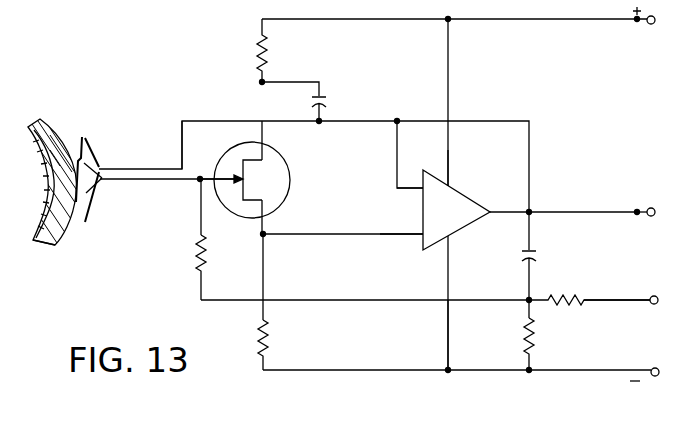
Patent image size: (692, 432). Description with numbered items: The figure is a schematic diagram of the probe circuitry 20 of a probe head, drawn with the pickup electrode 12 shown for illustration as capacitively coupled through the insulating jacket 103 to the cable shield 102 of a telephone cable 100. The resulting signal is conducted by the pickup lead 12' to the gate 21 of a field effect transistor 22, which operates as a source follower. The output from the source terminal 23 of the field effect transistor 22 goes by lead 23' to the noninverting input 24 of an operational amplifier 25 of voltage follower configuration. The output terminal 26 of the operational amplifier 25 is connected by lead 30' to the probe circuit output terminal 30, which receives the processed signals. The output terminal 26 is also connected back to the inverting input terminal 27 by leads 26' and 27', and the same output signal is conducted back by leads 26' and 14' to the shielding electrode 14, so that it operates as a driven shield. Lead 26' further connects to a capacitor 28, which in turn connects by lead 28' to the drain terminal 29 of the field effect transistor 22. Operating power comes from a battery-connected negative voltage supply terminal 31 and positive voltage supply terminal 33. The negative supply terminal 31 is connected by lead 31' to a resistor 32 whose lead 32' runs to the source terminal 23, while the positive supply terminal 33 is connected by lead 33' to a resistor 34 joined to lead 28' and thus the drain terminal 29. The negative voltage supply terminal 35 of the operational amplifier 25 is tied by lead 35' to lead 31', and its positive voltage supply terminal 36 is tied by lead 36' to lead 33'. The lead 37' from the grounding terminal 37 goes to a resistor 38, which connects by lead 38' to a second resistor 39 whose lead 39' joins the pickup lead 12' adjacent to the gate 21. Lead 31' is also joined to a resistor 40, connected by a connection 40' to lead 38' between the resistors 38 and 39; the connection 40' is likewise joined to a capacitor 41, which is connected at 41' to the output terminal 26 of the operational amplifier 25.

The telephone cable 100 is at (52, 118).
The cable shield 102 is at (46, 186).
The insulating jacket 103 is at (44, 241).
The pickup electrode 12 is at (73, 160).
The shielding electrode 14 is at (100, 171).
The pickup lead 12' is at (171, 189).
The shielding electrode lead 14' is at (180, 145).
The probe circuitry 20 is at (181, 88).
The gate 21 is at (226, 178).
The field effect transistor 22 is at (292, 197).
The source terminal 23 is at (250, 221).
The lead 23' is at (343, 224).
The noninverting input 24 is at (421, 236).
The operational amplifier 25 is at (478, 196).
The output terminal 26 is at (509, 229).
The lead 26' is at (356, 148).
The inverting input terminal 27 is at (410, 200).
The lead 27' is at (392, 154).
The capacitor 28 is at (334, 104).
The lead 28' is at (279, 82).
The drain terminal 29 is at (266, 132).
The output terminal 30 is at (650, 197).
The lead 30' is at (583, 195).
The negative voltage supply terminal 31 is at (639, 366).
The lead 31' is at (457, 370).
The resistor 32 is at (245, 345).
The lead 32' is at (279, 277).
The positive voltage supply terminal 33 is at (656, 16).
The lead 33' is at (449, 33).
The resistor 34 is at (257, 55).
The negative voltage supply terminal 35 is at (463, 304).
The lead 35' is at (434, 335).
The positive voltage supply terminal 36 is at (465, 168).
The lead 36' is at (467, 102).
The grounding terminal 37 is at (667, 289).
The lead 37' is at (617, 285).
The resistor 38 is at (589, 284).
The lead 38' is at (344, 306).
The resistor 39 is at (179, 267).
The lead 39' is at (180, 207).
The resistor 40 is at (541, 345).
The connection 40' is at (511, 298).
The capacitor 41 is at (545, 268).
The connection 41' is at (545, 215).